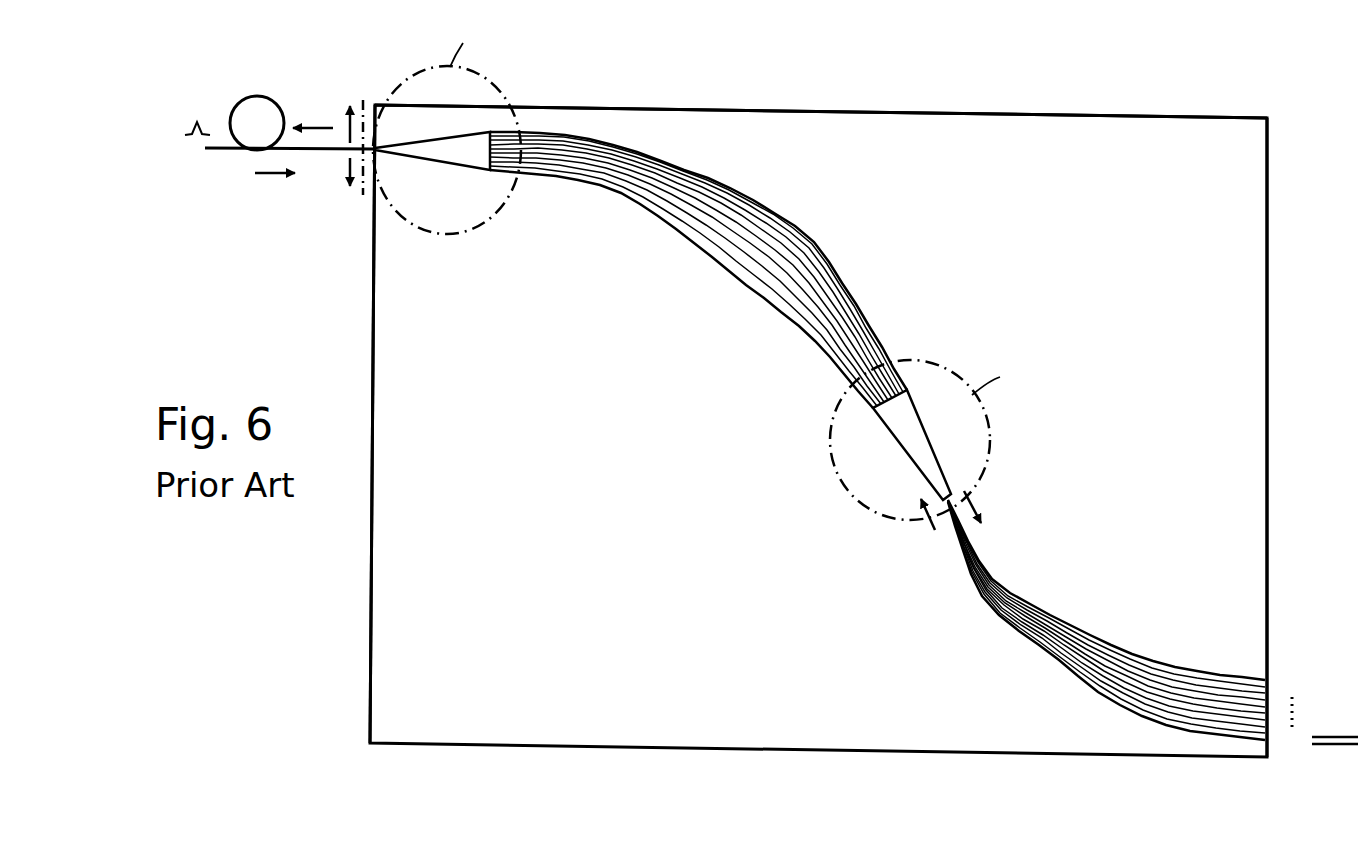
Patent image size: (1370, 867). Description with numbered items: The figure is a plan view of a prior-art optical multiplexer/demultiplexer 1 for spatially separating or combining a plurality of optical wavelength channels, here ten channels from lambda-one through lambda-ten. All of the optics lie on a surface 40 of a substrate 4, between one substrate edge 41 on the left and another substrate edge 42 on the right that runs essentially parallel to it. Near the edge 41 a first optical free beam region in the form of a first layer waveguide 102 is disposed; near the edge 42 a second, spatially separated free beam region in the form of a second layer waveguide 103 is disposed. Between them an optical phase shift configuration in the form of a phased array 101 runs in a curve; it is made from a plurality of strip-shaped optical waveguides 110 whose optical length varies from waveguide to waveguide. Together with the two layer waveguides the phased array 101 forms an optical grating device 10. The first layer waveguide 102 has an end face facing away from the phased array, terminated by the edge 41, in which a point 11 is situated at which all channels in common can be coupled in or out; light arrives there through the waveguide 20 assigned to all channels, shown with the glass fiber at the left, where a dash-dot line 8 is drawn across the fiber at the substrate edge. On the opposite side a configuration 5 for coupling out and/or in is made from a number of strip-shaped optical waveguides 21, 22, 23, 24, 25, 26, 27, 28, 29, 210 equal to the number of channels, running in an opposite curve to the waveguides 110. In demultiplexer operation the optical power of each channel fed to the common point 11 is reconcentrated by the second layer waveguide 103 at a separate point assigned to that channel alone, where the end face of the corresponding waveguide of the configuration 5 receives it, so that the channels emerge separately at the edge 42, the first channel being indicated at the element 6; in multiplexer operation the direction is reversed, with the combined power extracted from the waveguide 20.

The arrayed waveguide grating arrangement 1 is at (779, 100).
The substrate 4 is at (1057, 113).
The surface 40 is at (958, 140).
The substrate edge 41 is at (373, 307).
The other substrate edge 42 is at (1268, 228).
The waveguide 20 is at (245, 97).
The point 11 is at (380, 150).
The input plane 8 is at (360, 197).
The first layer waveguide 102 is at (437, 153).
The optical grating device 10 is at (842, 230).
The phased array 101 is at (703, 150).
The strip-shaped optical waveguide 110 is at (653, 218).
The second layer waveguide 103 is at (900, 428).
The configuration for coupling out and/or coupling in 5 is at (1130, 650).
The strip-shaped optical waveguide 21 is at (1093, 700).
The strip-shaped optical waveguide 22 is at (1127, 710).
The strip-shaped optical waveguide 23 is at (1153, 723).
The strip-shaped optical waveguide 24 is at (1187, 727).
The strip-shaped optical waveguide 25 is at (1207, 700).
The strip-shaped optical waveguide 26 is at (1180, 683).
The strip-shaped optical waveguide 27 is at (1153, 670).
The strip-shaped optical waveguide 28 is at (1102, 645).
The strip-shaped optical waveguide 29 is at (1072, 627).
The strip-shaped optical waveguide 210 is at (1041, 601).
The output fiber 6 is at (1335, 748).